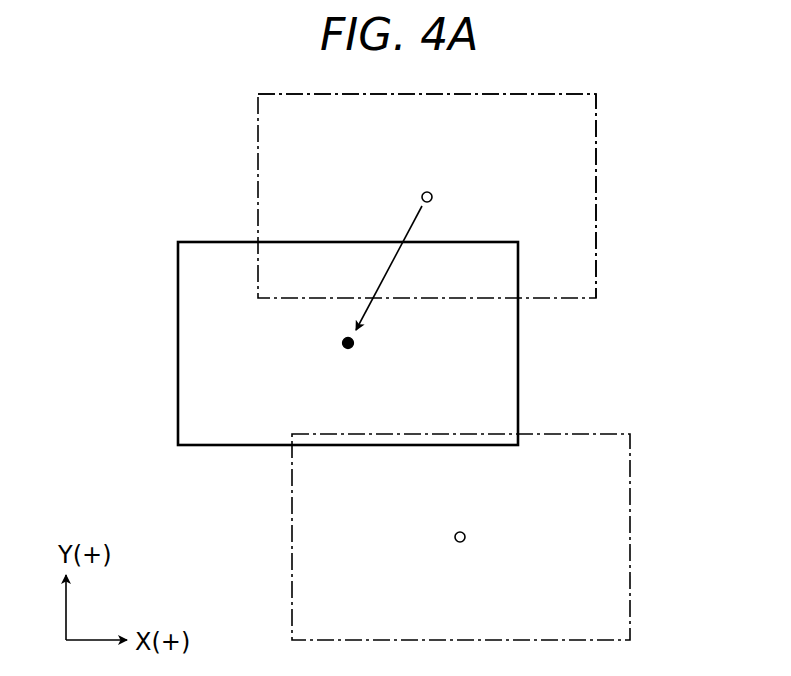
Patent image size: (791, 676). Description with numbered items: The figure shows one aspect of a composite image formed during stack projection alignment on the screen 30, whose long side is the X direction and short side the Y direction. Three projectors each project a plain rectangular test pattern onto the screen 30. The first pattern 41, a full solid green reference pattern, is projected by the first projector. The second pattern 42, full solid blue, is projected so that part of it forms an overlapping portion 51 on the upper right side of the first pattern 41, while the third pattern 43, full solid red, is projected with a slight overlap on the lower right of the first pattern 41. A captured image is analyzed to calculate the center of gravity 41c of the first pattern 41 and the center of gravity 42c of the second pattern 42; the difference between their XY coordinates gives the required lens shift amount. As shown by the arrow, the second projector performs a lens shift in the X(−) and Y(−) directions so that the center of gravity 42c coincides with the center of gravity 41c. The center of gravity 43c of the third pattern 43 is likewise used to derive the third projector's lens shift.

The screen 30 is at (699, 123).
The first pattern 41 is at (518, 369).
The center of gravity of the first pattern 41c is at (342, 343).
The second pattern 42 is at (596, 176).
The center of gravity of the second pattern 42c is at (432, 191).
The third pattern 43 is at (630, 578).
The center of gravity of the third pattern 43c is at (463, 542).
The overlapping portion 51 is at (303, 265).